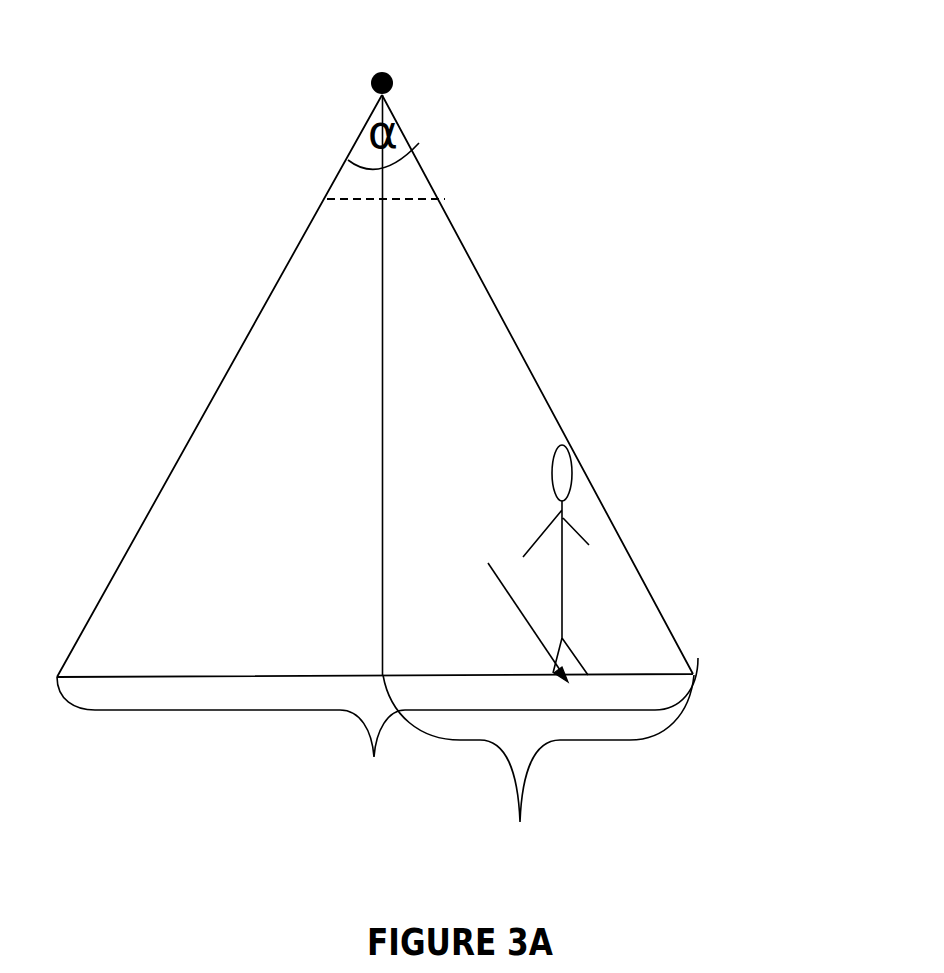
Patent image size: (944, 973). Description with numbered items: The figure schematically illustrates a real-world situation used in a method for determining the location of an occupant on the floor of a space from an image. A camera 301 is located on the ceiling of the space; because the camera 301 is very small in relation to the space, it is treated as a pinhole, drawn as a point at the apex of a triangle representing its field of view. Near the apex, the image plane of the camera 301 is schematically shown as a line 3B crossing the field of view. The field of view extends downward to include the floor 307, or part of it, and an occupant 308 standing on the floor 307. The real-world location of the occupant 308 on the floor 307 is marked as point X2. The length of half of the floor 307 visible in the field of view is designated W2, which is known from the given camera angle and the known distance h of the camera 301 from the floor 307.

The camera 301 is at (403, 64).
The image plane line 3B is at (385, 221).
The distance of camera from floor h is at (370, 385).
The floor 307 is at (377, 728).
The occupant 308 is at (563, 590).
The real-world location point X2 is at (513, 605).
The half floor length visible in FOV W2 is at (538, 770).